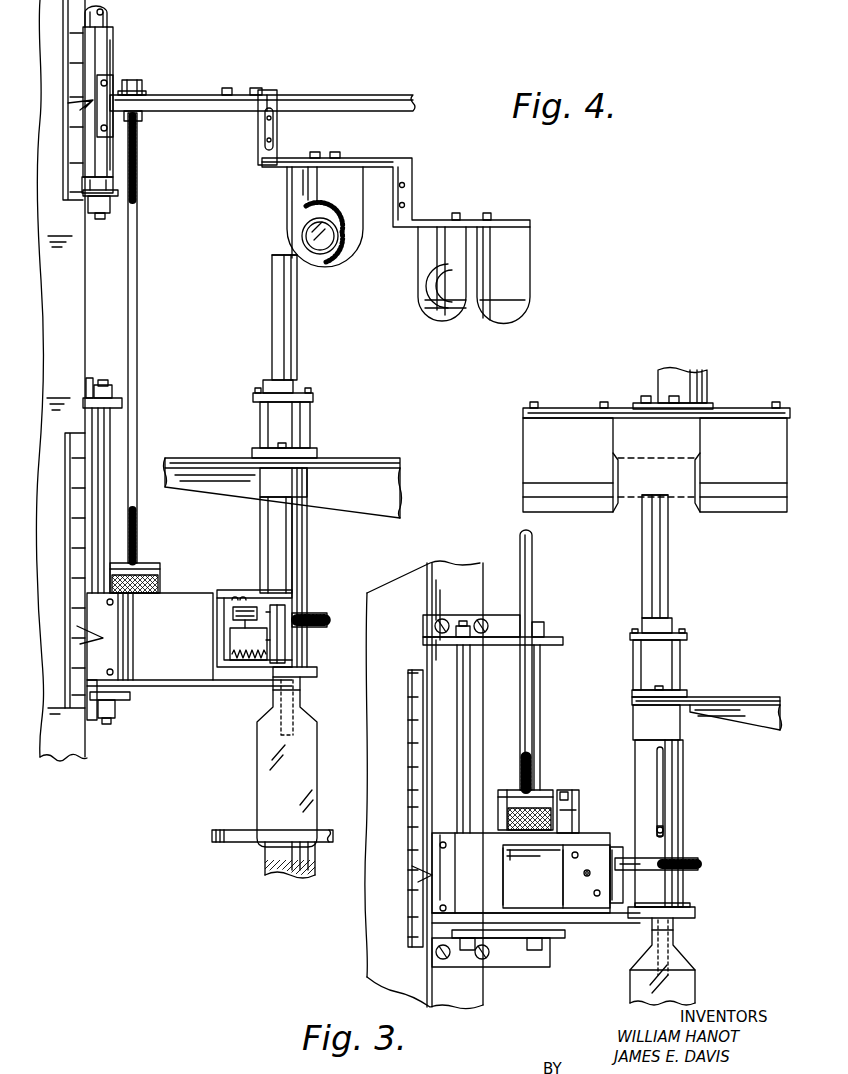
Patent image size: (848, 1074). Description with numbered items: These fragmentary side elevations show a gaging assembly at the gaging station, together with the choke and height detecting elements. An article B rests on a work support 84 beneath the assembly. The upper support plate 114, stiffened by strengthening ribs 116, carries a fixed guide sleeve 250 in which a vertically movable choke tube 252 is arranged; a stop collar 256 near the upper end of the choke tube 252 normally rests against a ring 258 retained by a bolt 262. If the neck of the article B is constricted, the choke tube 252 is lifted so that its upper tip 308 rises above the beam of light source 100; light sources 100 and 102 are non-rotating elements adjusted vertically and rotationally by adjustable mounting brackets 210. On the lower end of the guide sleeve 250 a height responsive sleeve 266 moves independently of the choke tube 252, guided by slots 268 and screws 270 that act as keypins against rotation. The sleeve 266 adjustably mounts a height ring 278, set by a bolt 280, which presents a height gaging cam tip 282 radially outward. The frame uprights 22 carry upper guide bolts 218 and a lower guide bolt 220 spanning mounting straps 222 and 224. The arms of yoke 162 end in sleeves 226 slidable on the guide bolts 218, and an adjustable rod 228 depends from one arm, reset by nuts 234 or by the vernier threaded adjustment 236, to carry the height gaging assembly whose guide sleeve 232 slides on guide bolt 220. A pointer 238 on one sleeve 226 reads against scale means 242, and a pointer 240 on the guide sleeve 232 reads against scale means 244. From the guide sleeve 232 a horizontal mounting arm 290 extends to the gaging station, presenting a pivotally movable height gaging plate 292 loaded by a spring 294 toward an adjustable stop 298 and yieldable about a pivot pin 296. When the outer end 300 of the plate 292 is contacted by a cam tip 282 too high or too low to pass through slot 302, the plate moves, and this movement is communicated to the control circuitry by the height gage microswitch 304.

In FIG. 4, the frame uprights 22 is at (78, 292).
In FIG. 3, the frame uprights 22 is at (395, 590).
In FIG. 4, the work support 84 is at (222, 832).
In FIG. 4, the light source 100 is at (300, 212).
In FIG. 3, the light source 100 is at (612, 505).
In FIG. 4, the light source 102 is at (470, 325).
In FIG. 4, the upper support plate 114 is at (342, 458).
In FIG. 3, the upper support plate 114 is at (742, 696).
In FIG. 4, the strengthening ribs 116 is at (352, 505).
In FIG. 3, the strengthening ribs 116 is at (748, 720).
In FIG. 4, the yoke 162 is at (366, 96).
In FIG. 4, the adjustable mounting brackets 210 is at (280, 162).
In FIG. 3, the adjustable mounting brackets 210 is at (690, 375).
In FIG. 4, the upper guide bolts 218 is at (107, 14).
In FIG. 4, the lower guide bolt 220 is at (108, 505).
In FIG. 3, the lower guide bolt 220 is at (470, 680).
In FIG. 4, the mounting straps 222 is at (115, 197).
In FIG. 4, the mounting straps 224 is at (121, 403).
In FIG. 3, the mounting straps 224 is at (495, 637).
In FIG. 4, the sleeves 226 is at (103, 158).
In FIG. 4, the adjustable rod 228 is at (137, 309).
In FIG. 3, the adjustable rod 228 is at (533, 572).
In FIG. 4, the guide sleeve 232 is at (128, 657).
In FIG. 4, the nuts 234 is at (141, 88).
In FIG. 4, the vernier threaded adjustment 236 is at (158, 572).
In FIG. 3, the vernier threaded adjustment 236 is at (516, 800).
In FIG. 4, the pointer 238 is at (85, 100).
In FIG. 4, the pointer 240 is at (93, 632).
In FIG. 3, the pointer 240 is at (428, 877).
In FIG. 4, the scale means 242 is at (73, 48).
In FIG. 3, the scale means 242 is at (411, 710).
In FIG. 4, the scale means 244 is at (78, 450).
In FIG. 4, the fixed guide sleeve 250 is at (302, 488).
In FIG. 3, the fixed guide sleeve 250 is at (648, 722).
In FIG. 4, the choke tube 252 is at (290, 324).
In FIG. 3, the choke tube 252 is at (669, 590).
In FIG. 4, the stop collar 256 is at (268, 386).
In FIG. 3, the stop collar 256 is at (641, 625).
In FIG. 4, the ring 258 is at (311, 400).
In FIG. 3, the ring 258 is at (688, 636).
In FIG. 4, the bolt 262 is at (262, 425).
In FIG. 4, the height responsive sleeve 266 is at (265, 535).
In FIG. 3, the height responsive sleeve 266 is at (640, 752).
In FIG. 3, the slots 268 is at (662, 773).
In FIG. 4, the screws 270 is at (312, 598).
In FIG. 3, the screws 270 is at (663, 828).
In FIG. 4, the height ring 278 is at (323, 614).
In FIG. 3, the height ring 278 is at (697, 856).
In FIG. 3, the bolt 280 is at (700, 864).
In FIG. 3, the height gaging cam tip 282 is at (618, 862).
In FIG. 4, the mounting arm 290 is at (190, 663).
In FIG. 3, the mounting arm 290 is at (485, 898).
In FIG. 4, the height gaging plate 292 is at (281, 652).
In FIG. 3, the height gaging plate 292 is at (545, 893).
In FIG. 4, the spring 294 is at (228, 655).
In FIG. 3, the pivot pin 296 is at (506, 853).
In FIG. 4, the adjustable stop 298 is at (267, 632).
In FIG. 3, the outer end 300 is at (590, 850).
In FIG. 3, the slot 302 is at (616, 875).
In FIG. 4, the height gage microswitch 304 is at (240, 608).
In FIG. 4, the upper tip 308 is at (275, 258).
In FIG. 3, the upper tip 308 is at (660, 493).
In FIG. 4, the article B is at (258, 758).
In FIG. 3, the article B is at (690, 968).